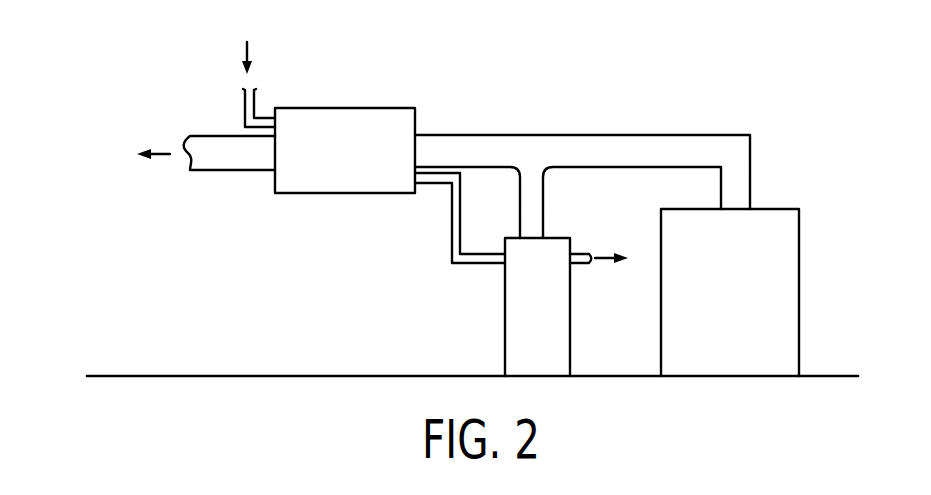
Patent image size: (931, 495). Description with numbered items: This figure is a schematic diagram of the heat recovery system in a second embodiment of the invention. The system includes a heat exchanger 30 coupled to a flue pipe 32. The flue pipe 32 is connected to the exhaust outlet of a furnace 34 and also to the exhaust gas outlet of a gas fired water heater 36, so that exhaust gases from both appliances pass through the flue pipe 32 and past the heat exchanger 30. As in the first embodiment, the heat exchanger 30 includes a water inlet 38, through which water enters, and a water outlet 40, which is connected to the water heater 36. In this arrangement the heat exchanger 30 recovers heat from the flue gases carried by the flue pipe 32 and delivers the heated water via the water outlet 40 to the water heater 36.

The heat exchanger 30 is at (360, 98).
The flue pipe 32 is at (553, 134).
The furnace 34 is at (799, 238).
The gas fired water heater 36 is at (505, 338).
The water inlet 38 is at (256, 102).
The water outlet 40 is at (449, 223).